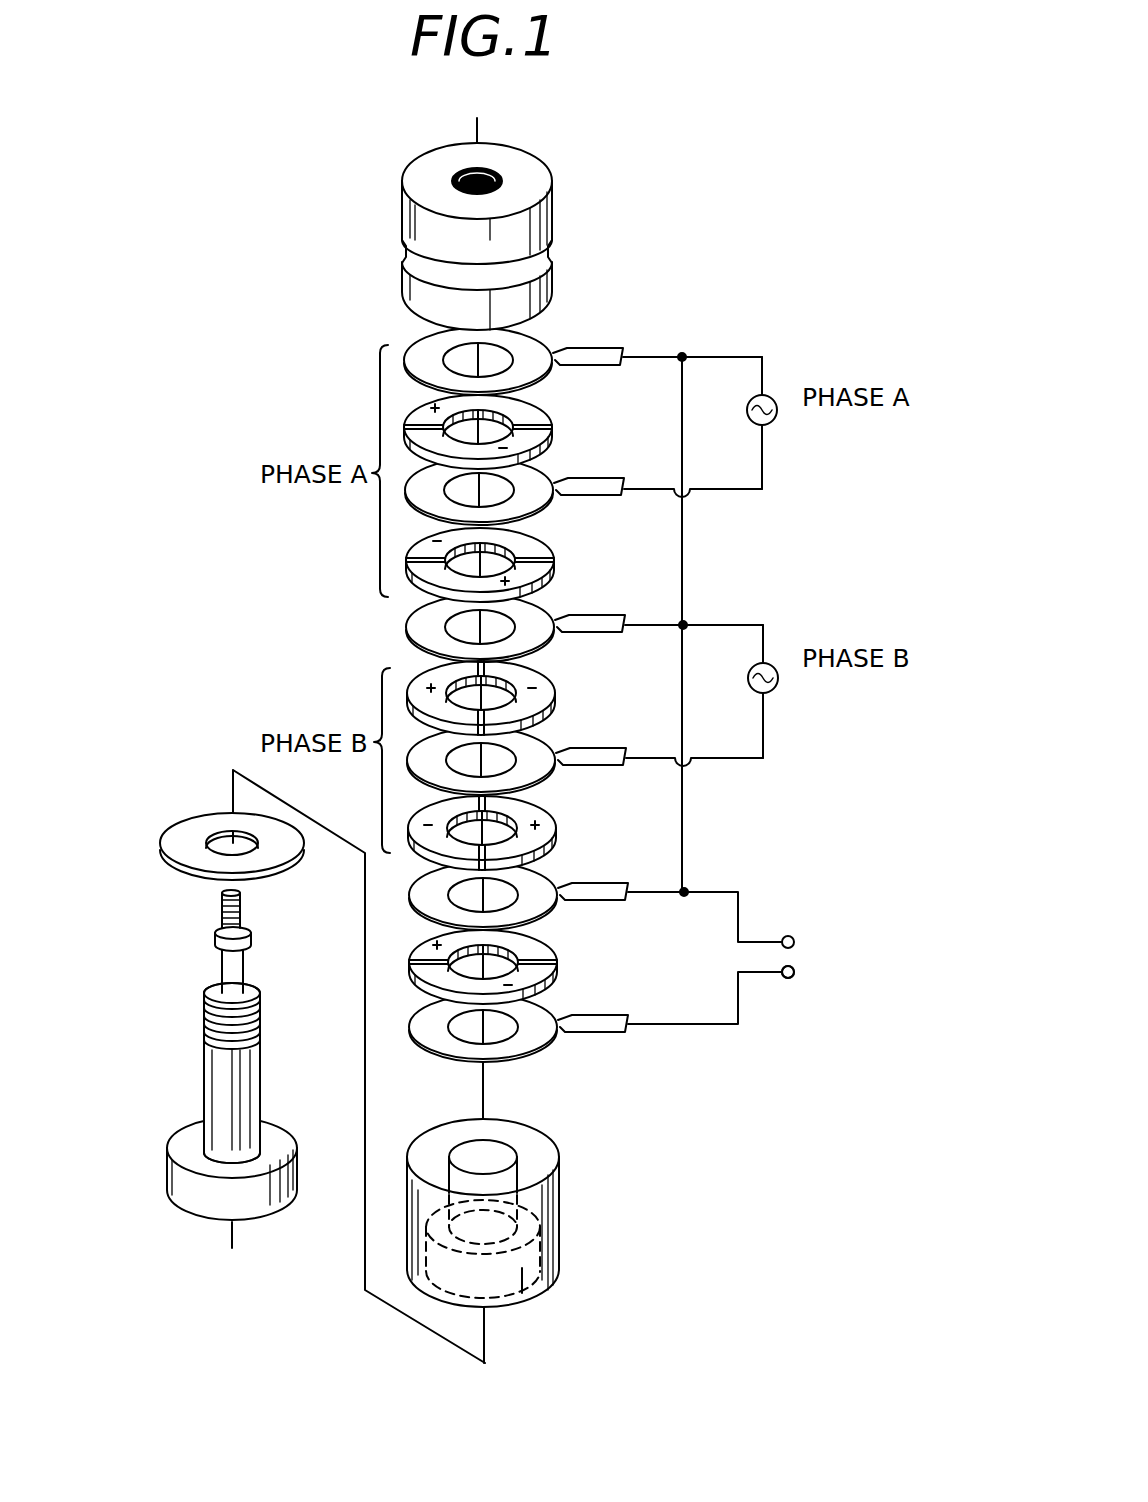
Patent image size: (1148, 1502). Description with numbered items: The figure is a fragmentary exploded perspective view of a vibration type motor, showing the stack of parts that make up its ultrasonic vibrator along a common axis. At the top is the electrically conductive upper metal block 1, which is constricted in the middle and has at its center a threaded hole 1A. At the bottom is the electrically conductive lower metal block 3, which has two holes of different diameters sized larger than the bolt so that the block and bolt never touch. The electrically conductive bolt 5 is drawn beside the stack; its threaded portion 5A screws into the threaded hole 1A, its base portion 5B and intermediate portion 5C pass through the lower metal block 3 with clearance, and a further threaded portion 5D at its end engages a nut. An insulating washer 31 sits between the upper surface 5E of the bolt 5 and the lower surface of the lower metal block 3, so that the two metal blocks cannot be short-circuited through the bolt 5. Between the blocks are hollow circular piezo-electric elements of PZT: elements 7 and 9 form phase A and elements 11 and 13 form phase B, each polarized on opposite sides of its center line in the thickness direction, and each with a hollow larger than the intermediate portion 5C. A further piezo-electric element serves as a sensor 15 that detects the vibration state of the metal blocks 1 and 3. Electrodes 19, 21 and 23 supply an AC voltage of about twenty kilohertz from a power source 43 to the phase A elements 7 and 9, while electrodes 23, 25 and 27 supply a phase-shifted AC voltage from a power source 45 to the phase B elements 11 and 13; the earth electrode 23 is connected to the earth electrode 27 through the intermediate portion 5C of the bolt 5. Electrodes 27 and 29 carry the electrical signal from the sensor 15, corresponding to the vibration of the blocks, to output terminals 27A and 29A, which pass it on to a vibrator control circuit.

The upper metal block 1 is at (403, 210).
The threaded hole 1A is at (493, 167).
The lower metal block 3 is at (557, 1198).
The bolt 5 is at (227, 1079).
The threaded portion 5A is at (205, 1002).
The base portion 5B is at (205, 1205).
The intermediate portion 5C is at (258, 1073).
The threaded portion 5D is at (218, 908).
The upper surface 5E is at (275, 1143).
The piezo-electric element 7 is at (553, 437).
The piezo-electric element 9 is at (556, 572).
The piezo-electric element 11 is at (555, 707).
The piezo-electric element 13 is at (555, 838).
The sensor 15 is at (555, 970).
The electrode 19 is at (600, 370).
The electrode 21 is at (598, 503).
The earth electrode 23 is at (598, 637).
The electrode 25 is at (605, 770).
The earth electrode 27 is at (610, 905).
The output terminal 27A is at (794, 936).
The electrode 29 is at (598, 1035).
The output terminal 29A is at (794, 976).
The insulating washer 31 is at (192, 822).
The power source 43 is at (776, 418).
The power source 45 is at (777, 685).